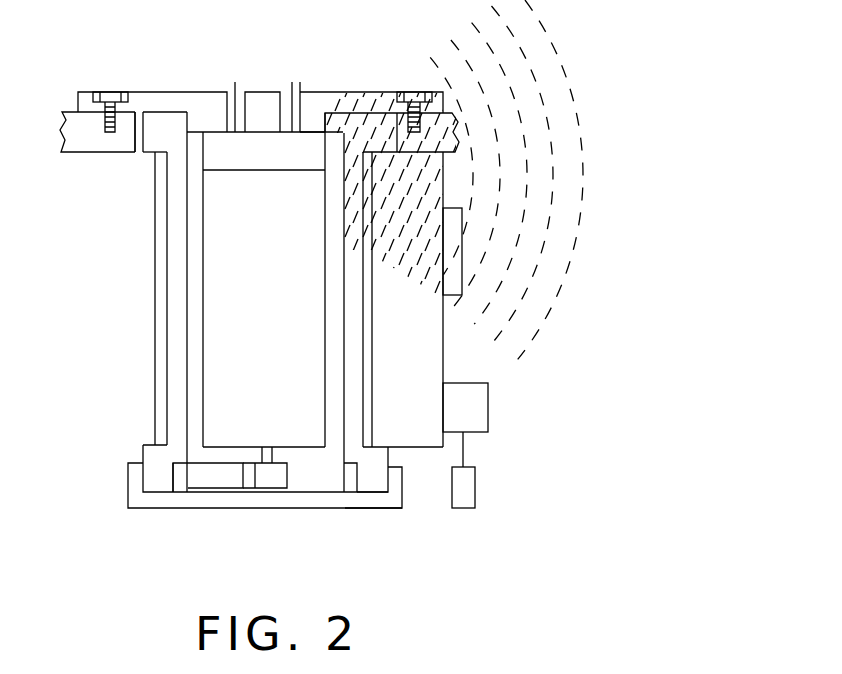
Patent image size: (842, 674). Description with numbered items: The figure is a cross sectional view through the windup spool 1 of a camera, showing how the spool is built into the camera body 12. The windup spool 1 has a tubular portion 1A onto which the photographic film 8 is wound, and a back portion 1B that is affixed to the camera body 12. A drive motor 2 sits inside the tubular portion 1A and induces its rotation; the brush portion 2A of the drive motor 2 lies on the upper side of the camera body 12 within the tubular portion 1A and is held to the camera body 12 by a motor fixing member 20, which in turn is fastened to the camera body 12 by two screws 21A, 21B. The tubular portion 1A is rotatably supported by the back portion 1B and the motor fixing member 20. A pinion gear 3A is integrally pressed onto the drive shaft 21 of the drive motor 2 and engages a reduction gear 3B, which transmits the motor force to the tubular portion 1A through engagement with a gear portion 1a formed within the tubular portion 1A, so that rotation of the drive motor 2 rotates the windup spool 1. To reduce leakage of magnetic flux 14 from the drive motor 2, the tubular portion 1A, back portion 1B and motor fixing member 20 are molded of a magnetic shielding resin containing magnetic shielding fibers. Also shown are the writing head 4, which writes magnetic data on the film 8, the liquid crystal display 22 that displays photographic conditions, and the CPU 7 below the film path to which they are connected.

The windup spool 1 is at (368, 478).
The tubular portion 1A is at (350, 113).
The back portion 1B is at (378, 505).
The gear portion 1a is at (170, 477).
The drive motor 2 is at (240, 326).
The brush portion 2A is at (257, 157).
The pinion gear 3A is at (275, 480).
The reduction gear 3B is at (213, 477).
The writing head 4 is at (477, 417).
The CPU 7 is at (468, 487).
The photographic film 8 is at (157, 398).
The camera body 12 is at (72, 142).
The magnetic flux 14 is at (540, 90).
The motor fixing member 20 is at (207, 102).
The drive shaft 21 is at (270, 454).
The screw 21A is at (112, 92).
The screw 21B is at (415, 95).
The liquid crystal display 22 is at (462, 258).